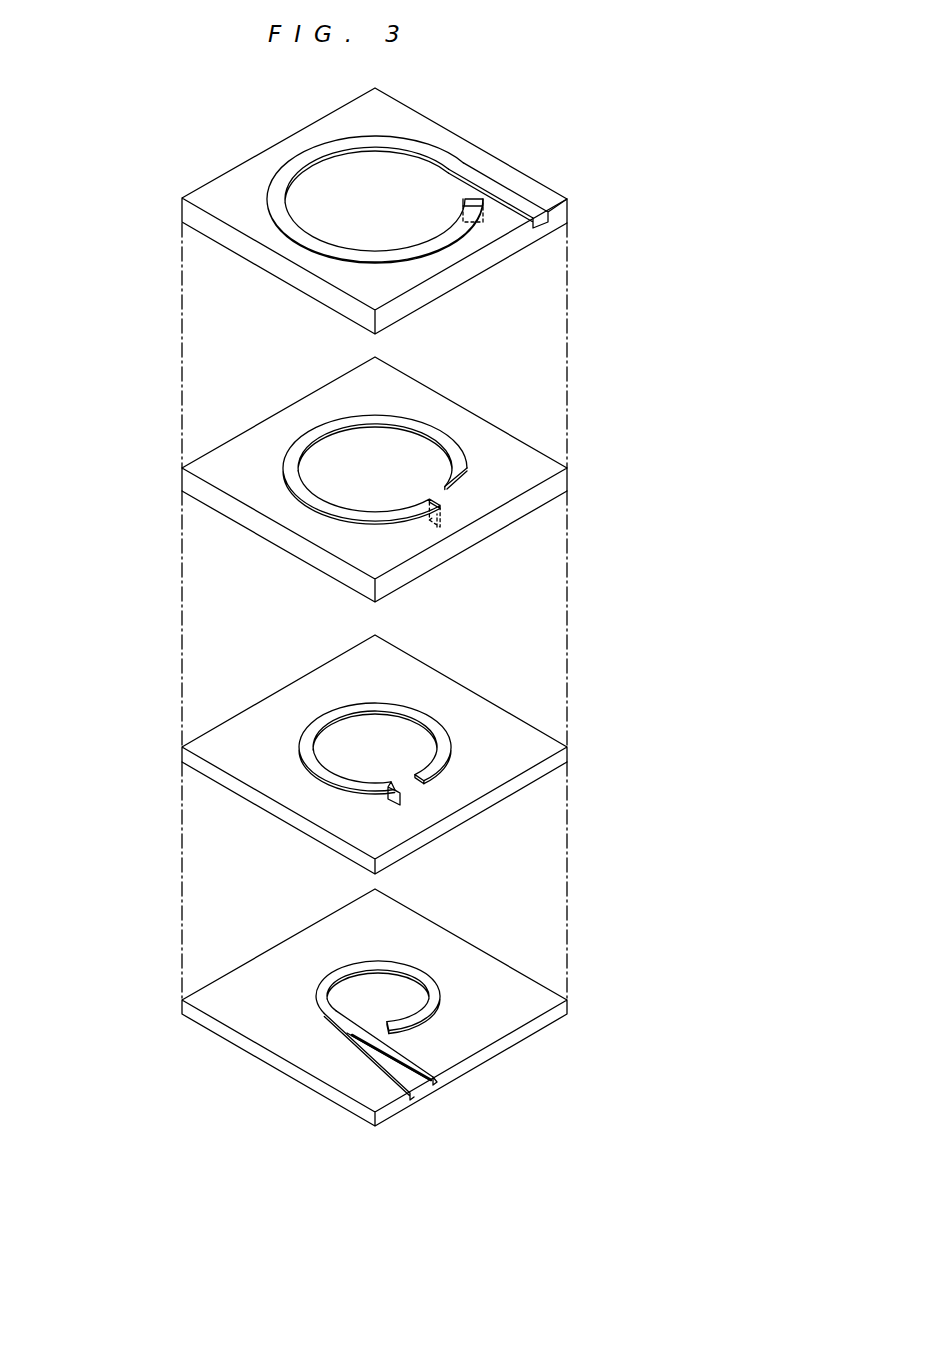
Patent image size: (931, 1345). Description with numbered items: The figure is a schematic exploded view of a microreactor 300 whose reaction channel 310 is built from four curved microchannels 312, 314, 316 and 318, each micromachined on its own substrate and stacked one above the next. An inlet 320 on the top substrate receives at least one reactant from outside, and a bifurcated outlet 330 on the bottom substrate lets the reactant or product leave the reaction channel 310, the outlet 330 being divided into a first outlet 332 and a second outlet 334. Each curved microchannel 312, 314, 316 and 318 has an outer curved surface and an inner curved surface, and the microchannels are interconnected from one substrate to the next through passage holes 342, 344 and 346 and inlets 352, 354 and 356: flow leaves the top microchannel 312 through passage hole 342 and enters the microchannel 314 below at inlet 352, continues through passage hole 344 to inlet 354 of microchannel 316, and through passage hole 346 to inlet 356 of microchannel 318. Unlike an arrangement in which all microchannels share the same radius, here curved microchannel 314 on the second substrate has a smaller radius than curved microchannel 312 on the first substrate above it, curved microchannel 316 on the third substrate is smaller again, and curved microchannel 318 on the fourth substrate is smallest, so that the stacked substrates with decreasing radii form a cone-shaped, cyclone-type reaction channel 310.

The microreactor 300 is at (502, 98).
The reaction channel 310 is at (98, 205).
The curved microchannel 312 is at (256, 200).
The curved microchannel 314 is at (268, 469).
The curved microchannel 316 is at (285, 749).
The curved microchannel 318 is at (303, 996).
The inlet 320 is at (553, 215).
The bifurcated outlet 330 is at (548, 1097).
The first outlet 332 is at (439, 1082).
The second outlet 334 is at (414, 1094).
The passage hole 342 is at (483, 228).
The passage hole 344 is at (428, 516).
The passage hole 346 is at (398, 802).
The inlet 352 is at (457, 447).
The inlet 354 is at (434, 773).
The inlet 356 is at (418, 1030).